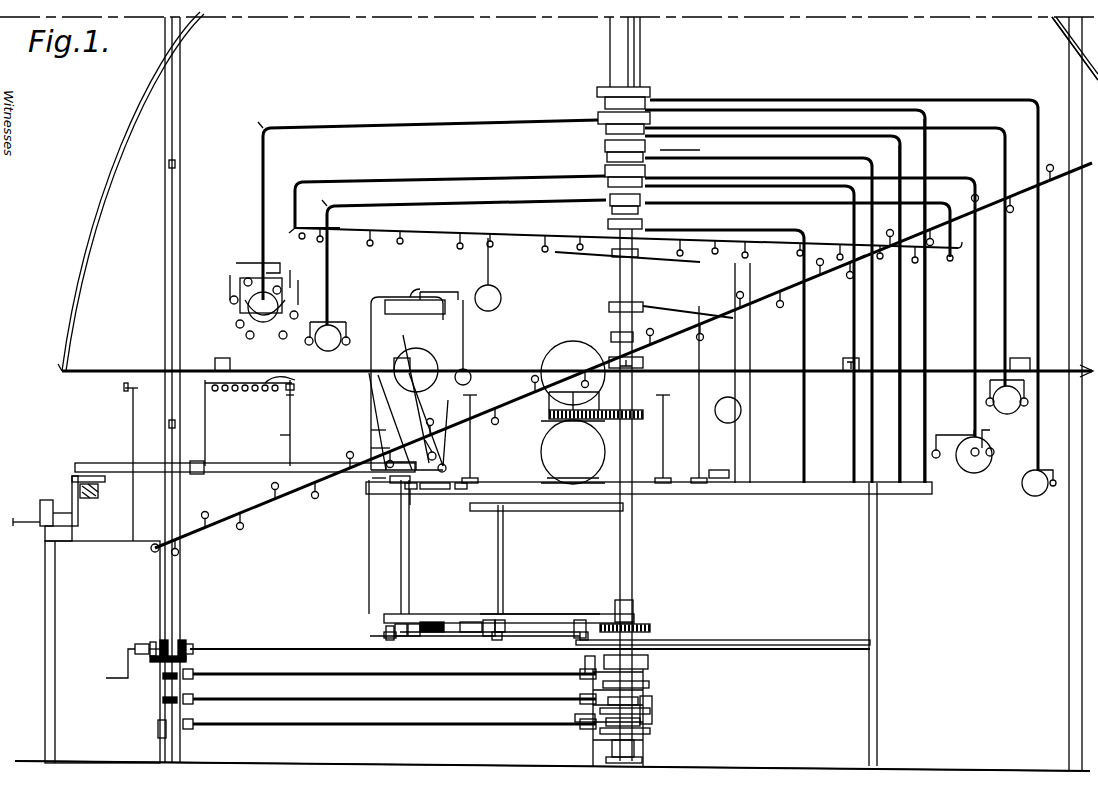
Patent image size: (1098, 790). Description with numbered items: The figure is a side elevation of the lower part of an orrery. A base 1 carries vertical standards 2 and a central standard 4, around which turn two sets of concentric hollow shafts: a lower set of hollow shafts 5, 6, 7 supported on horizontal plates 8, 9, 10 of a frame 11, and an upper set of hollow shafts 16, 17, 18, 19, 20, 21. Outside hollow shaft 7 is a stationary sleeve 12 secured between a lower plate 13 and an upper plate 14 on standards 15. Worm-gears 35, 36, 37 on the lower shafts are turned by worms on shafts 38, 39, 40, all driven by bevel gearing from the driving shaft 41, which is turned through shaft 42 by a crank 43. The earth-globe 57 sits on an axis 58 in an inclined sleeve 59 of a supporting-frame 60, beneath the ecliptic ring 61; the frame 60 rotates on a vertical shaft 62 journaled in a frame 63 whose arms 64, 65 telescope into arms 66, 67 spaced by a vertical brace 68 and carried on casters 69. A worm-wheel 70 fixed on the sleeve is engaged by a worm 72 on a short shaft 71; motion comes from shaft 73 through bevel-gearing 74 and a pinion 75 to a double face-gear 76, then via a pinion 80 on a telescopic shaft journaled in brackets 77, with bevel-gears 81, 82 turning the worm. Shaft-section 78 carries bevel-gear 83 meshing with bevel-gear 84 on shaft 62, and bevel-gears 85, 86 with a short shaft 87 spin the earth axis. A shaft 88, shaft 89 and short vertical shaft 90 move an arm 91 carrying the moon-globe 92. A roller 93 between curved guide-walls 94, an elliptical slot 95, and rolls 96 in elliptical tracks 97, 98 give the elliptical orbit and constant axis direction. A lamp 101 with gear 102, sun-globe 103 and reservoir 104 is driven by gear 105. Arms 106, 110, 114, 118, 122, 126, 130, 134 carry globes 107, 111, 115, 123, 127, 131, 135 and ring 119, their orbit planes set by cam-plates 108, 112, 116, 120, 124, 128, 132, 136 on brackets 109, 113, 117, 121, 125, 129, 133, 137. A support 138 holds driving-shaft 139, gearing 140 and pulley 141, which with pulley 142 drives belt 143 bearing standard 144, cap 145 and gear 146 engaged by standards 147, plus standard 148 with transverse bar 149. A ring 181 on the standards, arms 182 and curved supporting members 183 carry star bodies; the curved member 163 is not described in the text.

The base 1 is at (790, 766).
The vertical standards 2 is at (181, 590).
The standard 4 is at (639, 253).
The hollow shaft 5 is at (575, 717).
The hollow shaft 6 is at (639, 700).
The hollow shaft 7 is at (649, 662).
The horizontal plate 8 is at (635, 748).
The horizontal plate 9 is at (641, 720).
The horizontal plate 10 is at (650, 686).
The frame 11 is at (653, 712).
The stationary sleeve 12 is at (633, 553).
The lower plate 13 is at (806, 652).
The upper plate 14 is at (763, 495).
The standards 15 is at (366, 580).
The hollow shaft 16 is at (639, 211).
The hollow shaft 17 is at (642, 183).
The hollow shaft 18 is at (644, 158).
The hollow shaft 19 is at (645, 132).
The hollow shaft 20 is at (646, 107).
The hollow shaft 21 is at (642, 43).
The worm-gear 35 is at (651, 732).
The worm-gear 36 is at (651, 710).
The worm-gear 37 is at (644, 676).
The shaft 38 is at (466, 726).
The shaft 39 is at (466, 701).
The shaft 40 is at (466, 676).
The shaft 41 is at (181, 245).
The shaft 42 is at (138, 644).
The crank 43 is at (128, 650).
The earth-globe 57 is at (426, 352).
The axis 58 is at (406, 421).
The inclined sleeve 59 is at (448, 425).
The supporting-frame 60 is at (371, 400).
The ring 61 is at (907, 377).
The vertical shaft 62 is at (410, 545).
The frame 63 is at (401, 545).
The arm 64 is at (464, 622).
The arm 65 is at (445, 490).
The arm 66 is at (548, 614).
The arm 67 is at (560, 511).
The vertical brace 68 is at (504, 560).
The casters 69 is at (384, 636).
The worm-wheel 70 is at (640, 624).
The short shaft 71 is at (530, 614).
The worm 72 is at (634, 612).
The shaft 73 is at (264, 648).
The bevel-gearing 74 is at (187, 645).
The pinion 75 is at (586, 670).
The double face-gear 76 is at (668, 641).
The brackets 77 is at (486, 620).
The shaft-section 78 is at (455, 633).
The pinion 80 is at (580, 620).
The bevel-gear 81 is at (502, 620).
The bevel-gear 82 is at (497, 641).
The bevel-gear 83 is at (420, 637).
The bevel-gear 84 is at (430, 622).
The bevel-gear 85 is at (371, 446).
The bevel-gear 86 is at (434, 452).
The short shaft 87 is at (446, 468).
The shaft 88 is at (371, 428).
The shaft 89 is at (400, 322).
The short vertical shaft 90 is at (392, 297).
The arm 91 is at (456, 290).
The moon-globe 92 is at (412, 290).
The roller 93 is at (395, 626).
The curved guide-walls 94 is at (390, 641).
The elliptical slot 95 is at (400, 484).
The rolls 96 is at (372, 488).
The elliptical track 97 is at (372, 480).
The elliptical track 98 is at (462, 490).
The lamp 101 is at (549, 413).
The gear 102 is at (552, 422).
The rotatable globe 103 is at (573, 375).
The reservoir 104 is at (573, 452).
The gear 105 is at (640, 369).
The arm 106 is at (575, 250).
The globe 107 is at (501, 296).
The cam-plate 108 is at (600, 246).
The bracket 109 is at (660, 258).
The pivoted arm 110 is at (634, 303).
The globe 111 is at (720, 418).
The cam-plate 112 is at (609, 307).
The bracket 113 is at (664, 396).
The arm 114 is at (440, 212).
The globe 115 is at (322, 343).
The cam-plate 116 is at (608, 224).
The bracket 117 is at (716, 230).
The arms 118 is at (446, 184).
The ring 119 is at (297, 231).
The cam-plate 120 is at (610, 200).
The bracket 121 is at (800, 230).
The arm 122 is at (915, 178).
The globe 123 is at (966, 470).
The cam-plate 124 is at (605, 171).
The bracket 125 is at (772, 180).
The arm 126 is at (443, 134).
The globe 127 is at (240, 318).
The cam-plate 128 is at (605, 146).
The bracket 129 is at (686, 152).
The arm 130 is at (940, 127).
The globe 131 is at (1010, 414).
The cam-plate 132 is at (598, 118).
The bracket 133 is at (742, 136).
The arm 134 is at (950, 99).
The globe 135 is at (1030, 496).
The cam-plate 136 is at (597, 91).
The bracket 137 is at (745, 112).
The support 138 is at (90, 541).
The driving-shaft 139 is at (60, 496).
The gearing 140 is at (98, 500).
The pulley 141 is at (86, 463).
The pulley 142 is at (716, 470).
The belt 143 is at (236, 458).
The standard 144 is at (289, 434).
The cap 145 is at (295, 386).
The gear 146 is at (288, 398).
The standards 147 is at (471, 455).
The standard 148 is at (206, 420).
The transverse bar 149 is at (248, 380).
The curved rail 163 is at (74, 292).
The ring 181 is at (883, 250).
The arms 182 is at (63, 375).
The curved supporting members 183 is at (1058, 40).